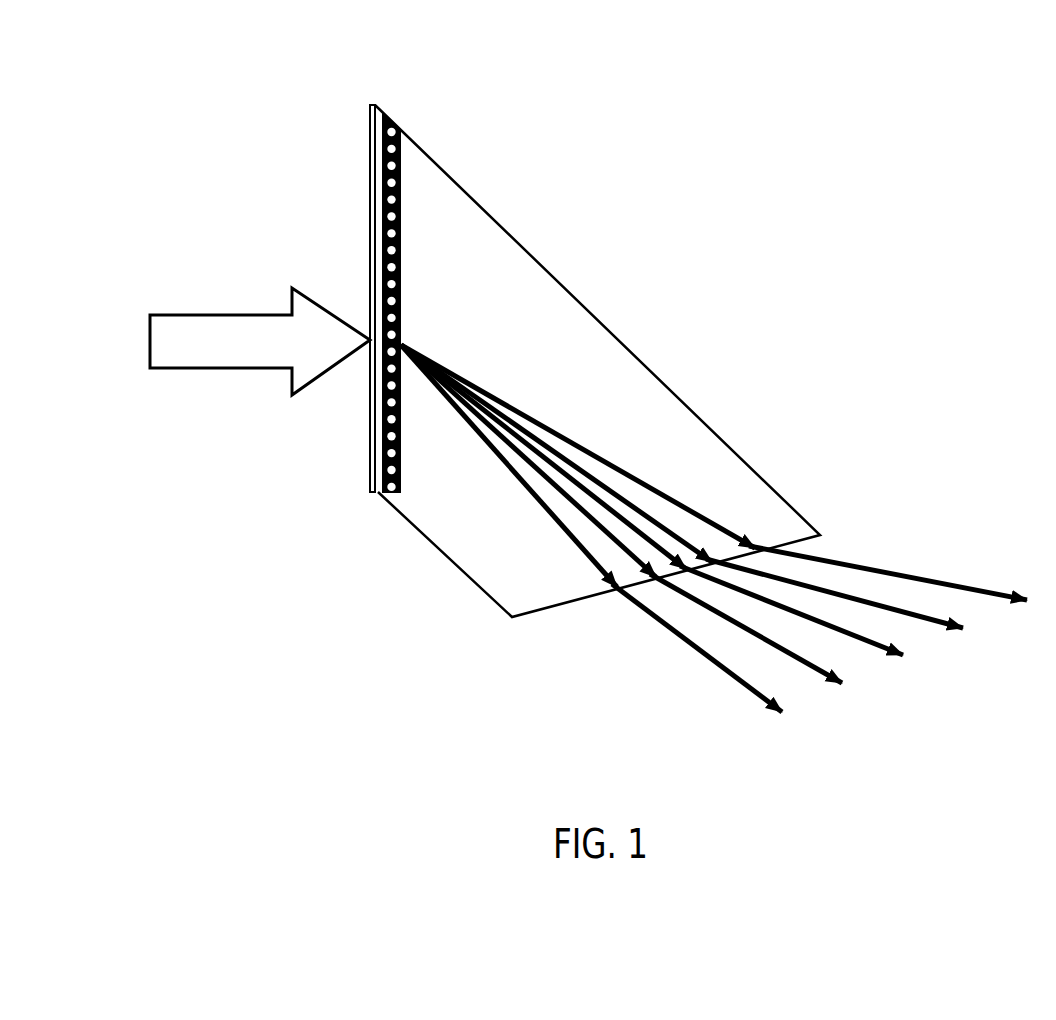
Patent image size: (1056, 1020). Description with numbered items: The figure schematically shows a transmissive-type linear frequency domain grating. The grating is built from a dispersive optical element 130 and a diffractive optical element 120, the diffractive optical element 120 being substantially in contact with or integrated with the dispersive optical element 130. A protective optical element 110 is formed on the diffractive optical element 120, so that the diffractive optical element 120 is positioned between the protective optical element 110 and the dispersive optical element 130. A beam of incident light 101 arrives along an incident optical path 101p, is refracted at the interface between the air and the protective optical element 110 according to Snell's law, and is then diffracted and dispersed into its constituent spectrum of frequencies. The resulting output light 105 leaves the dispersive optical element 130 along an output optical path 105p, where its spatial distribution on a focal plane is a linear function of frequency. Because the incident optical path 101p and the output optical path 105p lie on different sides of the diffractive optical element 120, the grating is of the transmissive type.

The incident light 101 is at (222, 322).
The incident optical path 101p is at (133, 270).
The output light 105 is at (714, 528).
The output optical path 105p is at (948, 503).
The protective optical element 110 is at (373, 492).
The diffractive optical element 120 is at (402, 132).
The dispersive optical element 130 is at (672, 428).